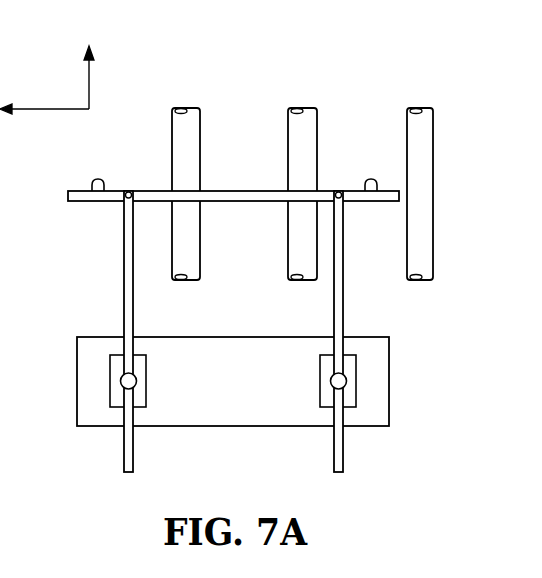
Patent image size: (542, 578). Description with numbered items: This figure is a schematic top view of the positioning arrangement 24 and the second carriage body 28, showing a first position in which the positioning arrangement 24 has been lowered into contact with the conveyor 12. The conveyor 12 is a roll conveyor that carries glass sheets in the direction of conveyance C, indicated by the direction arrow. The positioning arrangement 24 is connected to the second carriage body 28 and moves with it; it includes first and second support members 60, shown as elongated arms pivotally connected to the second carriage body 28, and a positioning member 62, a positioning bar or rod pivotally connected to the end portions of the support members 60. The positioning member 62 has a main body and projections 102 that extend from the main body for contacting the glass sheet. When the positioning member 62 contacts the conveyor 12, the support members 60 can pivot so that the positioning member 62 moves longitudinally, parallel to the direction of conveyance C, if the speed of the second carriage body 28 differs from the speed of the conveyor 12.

The conveyor 12 is at (437, 121).
The positioning arrangement 24 is at (362, 325).
The second carriage body 28 is at (280, 337).
The support members 60 is at (123, 275).
The positioning member 62 is at (267, 191).
The projections 102 is at (98, 179).
The direction of conveyance C is at (21, 111).